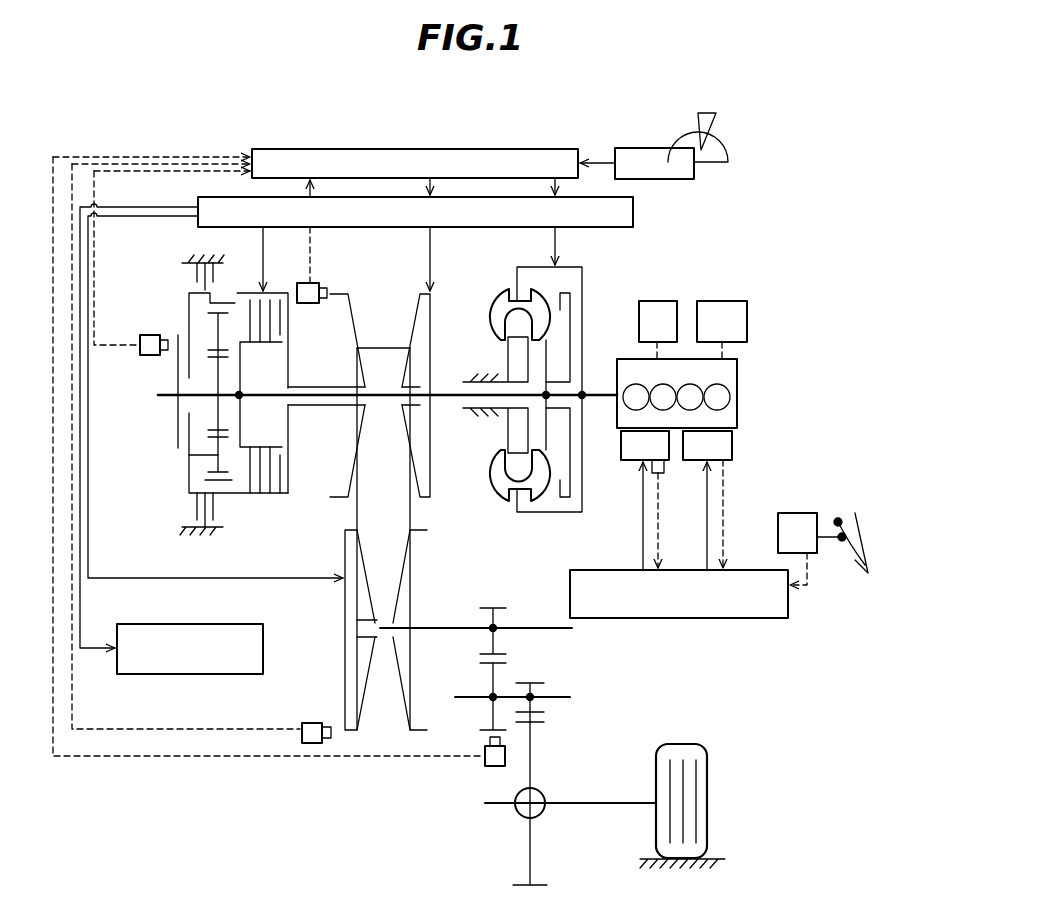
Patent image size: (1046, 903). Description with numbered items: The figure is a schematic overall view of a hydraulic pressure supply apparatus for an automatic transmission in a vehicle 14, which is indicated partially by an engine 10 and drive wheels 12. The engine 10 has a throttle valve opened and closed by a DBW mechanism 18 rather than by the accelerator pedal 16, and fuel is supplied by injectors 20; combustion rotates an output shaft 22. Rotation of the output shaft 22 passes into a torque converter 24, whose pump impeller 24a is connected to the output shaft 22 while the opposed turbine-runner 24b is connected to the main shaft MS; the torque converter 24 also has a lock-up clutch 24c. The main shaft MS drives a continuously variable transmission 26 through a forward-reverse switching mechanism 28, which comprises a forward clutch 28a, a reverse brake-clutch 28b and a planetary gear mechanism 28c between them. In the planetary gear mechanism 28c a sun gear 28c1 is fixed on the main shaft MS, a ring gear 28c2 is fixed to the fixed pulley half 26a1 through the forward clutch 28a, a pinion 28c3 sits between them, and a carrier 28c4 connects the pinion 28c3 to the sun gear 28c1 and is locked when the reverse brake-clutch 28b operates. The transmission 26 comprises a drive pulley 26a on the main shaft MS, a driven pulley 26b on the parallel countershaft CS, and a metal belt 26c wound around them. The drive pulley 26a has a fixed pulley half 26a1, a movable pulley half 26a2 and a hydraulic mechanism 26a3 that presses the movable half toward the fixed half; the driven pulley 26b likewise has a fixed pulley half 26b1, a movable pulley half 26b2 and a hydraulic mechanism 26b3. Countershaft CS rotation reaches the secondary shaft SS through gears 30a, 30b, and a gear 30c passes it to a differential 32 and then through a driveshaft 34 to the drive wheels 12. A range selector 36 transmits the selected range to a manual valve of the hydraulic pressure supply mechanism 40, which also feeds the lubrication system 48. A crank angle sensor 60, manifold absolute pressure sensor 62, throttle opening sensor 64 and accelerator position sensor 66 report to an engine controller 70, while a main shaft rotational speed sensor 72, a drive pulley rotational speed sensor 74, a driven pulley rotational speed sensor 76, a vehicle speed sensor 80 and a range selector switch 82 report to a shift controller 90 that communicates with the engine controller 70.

The engine 10 is at (737, 430).
The drive wheels 12 is at (710, 769).
The vehicle 14 is at (780, 190).
The accelerator pedal 16 is at (852, 522).
The DBW mechanism 18 is at (635, 462).
The injectors 20 is at (703, 462).
The output shaft 22 is at (600, 400).
The torque converter 24 is at (538, 388).
The pump impeller 24a is at (495, 300).
The turbine-runner 24b is at (524, 498).
The lock-up clutch 24c is at (573, 291).
The Continuously Variable Transmission 26 is at (380, 505).
The drive pulley 26a is at (410, 388).
The fixed pulley half 26a1 is at (352, 296).
The movable pulley half 26a2 is at (417, 314).
The hydraulic mechanism 26a3 is at (420, 362).
The driven pulley 26b is at (365, 630).
The fixed pulley half 26b1 is at (427, 533).
The movable pulley half 26b2 is at (343, 531).
The hydraulic mechanism 26b3 is at (345, 662).
The metal belt 26c is at (357, 510).
The forward-reverse switching mechanism 28 is at (196, 390).
The forward clutch 28a is at (255, 345).
The reverse brake-clutch 28b is at (190, 272).
The planetary gear mechanism 28c is at (207, 378).
The sun gear 28c1 is at (215, 412).
The ring gear 28c2 is at (255, 500).
The pinion 28c3 is at (215, 460).
The carrier 28c4 is at (188, 478).
The gear 30a is at (496, 608).
The gear 30b is at (485, 707).
The gear 30c is at (532, 683).
The differential 32 is at (518, 814).
The driveshaft 34 is at (636, 802).
The range selector 36 is at (716, 115).
The hydraulic pressure supply mechanism 40 is at (633, 212).
The lubrication system 48 is at (212, 624).
The crank angle sensor 60 is at (662, 300).
The manifold absolute pressure sensor 62 is at (724, 300).
The throttle opening sensor 64 is at (662, 475).
The accelerator position sensor 66 is at (798, 513).
The engine controller 70 is at (732, 618).
The NT sensor 72 is at (143, 335).
The NDR sensor 74 is at (300, 283).
The NDN sensor 76 is at (302, 727).
The vehicle speed sensor 80 is at (492, 768).
The range selector switch 82 is at (645, 148).
The shift controller 90 is at (455, 149).
The main shaft MS is at (432, 398).
The countershaft CS is at (422, 631).
The secondary shaft SS is at (565, 700).